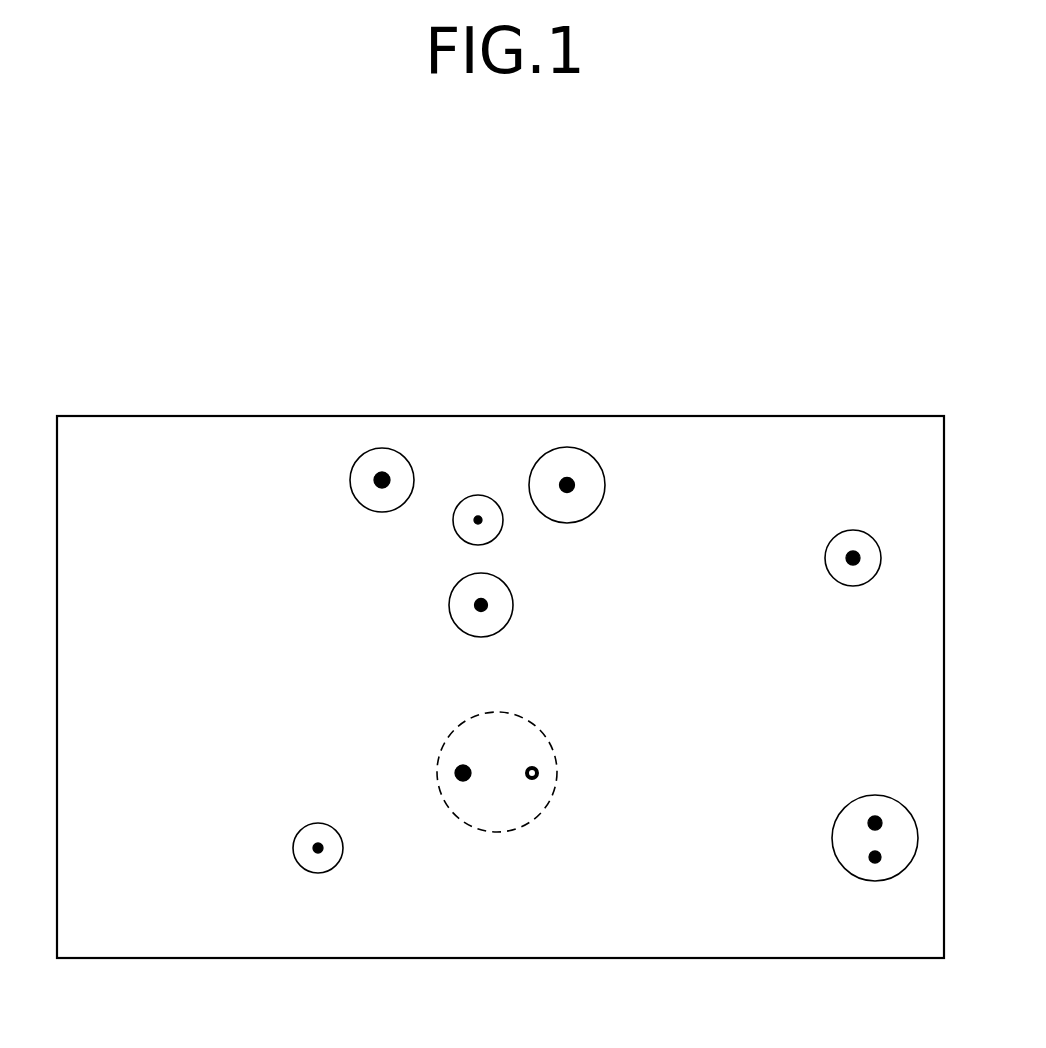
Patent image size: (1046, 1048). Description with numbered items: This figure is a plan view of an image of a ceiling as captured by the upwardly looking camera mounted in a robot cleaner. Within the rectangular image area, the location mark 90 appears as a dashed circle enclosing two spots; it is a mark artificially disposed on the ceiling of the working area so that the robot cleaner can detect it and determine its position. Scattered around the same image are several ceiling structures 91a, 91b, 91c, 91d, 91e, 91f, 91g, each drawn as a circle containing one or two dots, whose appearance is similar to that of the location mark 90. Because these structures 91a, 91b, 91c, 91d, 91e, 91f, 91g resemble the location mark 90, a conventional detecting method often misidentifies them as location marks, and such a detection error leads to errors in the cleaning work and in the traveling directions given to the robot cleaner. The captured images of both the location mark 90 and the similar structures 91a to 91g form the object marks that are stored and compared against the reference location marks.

The location mark 90 is at (497, 832).
The structure 91a is at (567, 447).
The structure 91b is at (852, 530).
The structure 91c is at (382, 448).
The structure 91d is at (478, 495).
The structure 91e is at (450, 607).
The structure 91f is at (318, 873).
The structure 91g is at (875, 881).